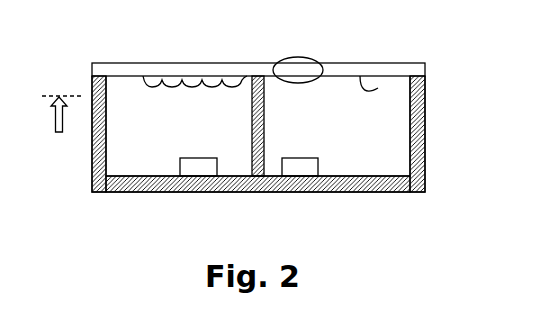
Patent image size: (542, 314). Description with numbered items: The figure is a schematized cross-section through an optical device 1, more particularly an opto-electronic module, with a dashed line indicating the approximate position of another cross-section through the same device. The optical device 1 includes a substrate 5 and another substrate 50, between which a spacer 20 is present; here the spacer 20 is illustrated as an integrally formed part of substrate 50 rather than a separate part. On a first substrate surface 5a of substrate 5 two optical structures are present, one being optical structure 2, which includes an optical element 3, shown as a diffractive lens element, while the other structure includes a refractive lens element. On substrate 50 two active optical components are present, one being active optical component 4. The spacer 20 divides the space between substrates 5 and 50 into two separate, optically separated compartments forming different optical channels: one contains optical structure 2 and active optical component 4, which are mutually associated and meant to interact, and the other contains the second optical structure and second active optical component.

The optical device 1 is at (66, 35).
The substrate 5 is at (128, 72).
The first substrate surface 5a is at (378, 88).
The optical structure 2 is at (195, 56).
The optical element 3 is at (223, 80).
The active optical component 4 is at (190, 163).
The spacer 20 is at (260, 140).
The substrate 50 is at (377, 187).